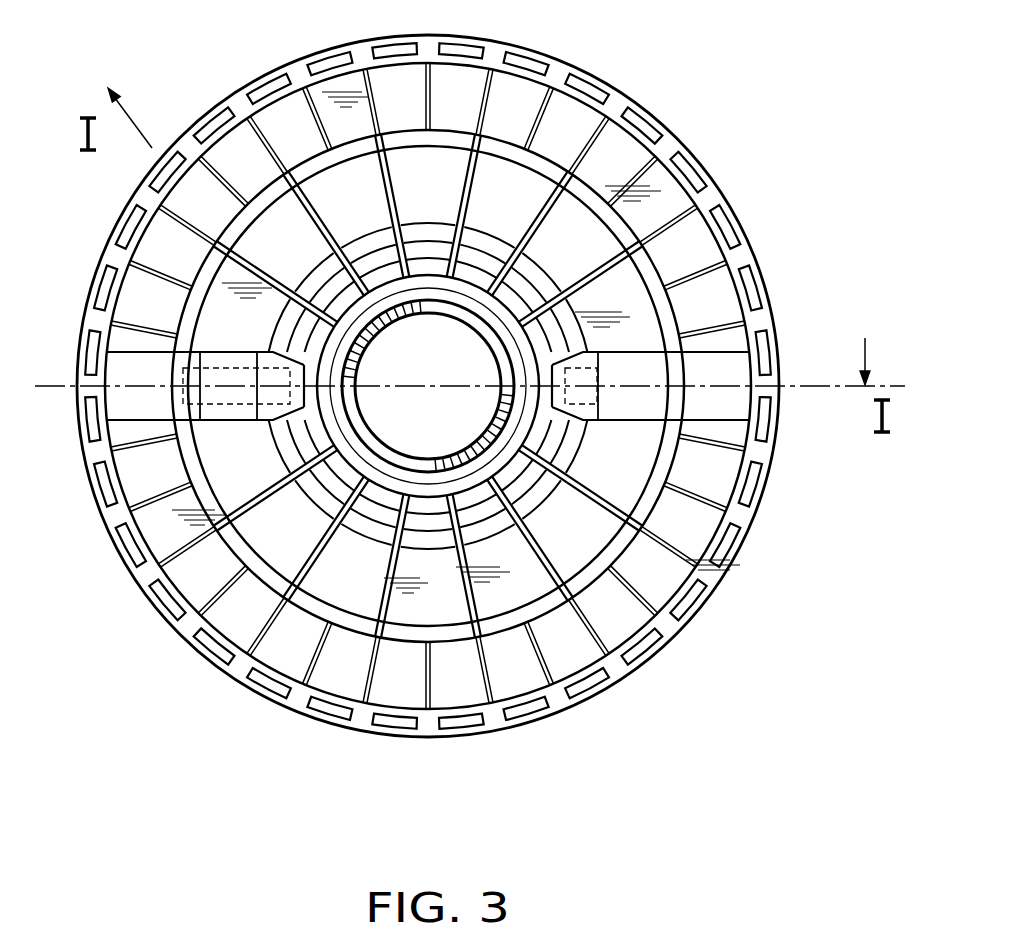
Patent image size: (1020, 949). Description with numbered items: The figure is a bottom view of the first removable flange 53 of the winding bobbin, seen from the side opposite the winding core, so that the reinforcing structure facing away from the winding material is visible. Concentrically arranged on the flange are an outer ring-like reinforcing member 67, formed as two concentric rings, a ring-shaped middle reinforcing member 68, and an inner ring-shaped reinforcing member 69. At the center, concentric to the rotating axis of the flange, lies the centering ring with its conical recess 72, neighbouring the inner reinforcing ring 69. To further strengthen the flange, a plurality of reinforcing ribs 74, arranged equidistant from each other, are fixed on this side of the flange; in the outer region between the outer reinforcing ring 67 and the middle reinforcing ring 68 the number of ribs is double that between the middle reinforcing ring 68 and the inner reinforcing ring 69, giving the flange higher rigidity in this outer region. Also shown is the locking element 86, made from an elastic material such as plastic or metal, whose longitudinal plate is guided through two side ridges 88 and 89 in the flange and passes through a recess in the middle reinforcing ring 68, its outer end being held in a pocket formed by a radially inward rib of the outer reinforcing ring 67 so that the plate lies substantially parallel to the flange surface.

The first removable flange 53 is at (683, 716).
The outer ring-like reinforcing member 67 is at (557, 72).
The second middle reinforcing member 68 is at (293, 148).
The reinforcing ribs 74 is at (268, 271).
The third inner lying ring-shaped reinforcing member 69 is at (337, 474).
The conical recess 72 is at (401, 311).
The side ridge 89 is at (617, 353).
The locking element 86 is at (645, 390).
The side ridge 88 is at (633, 421).